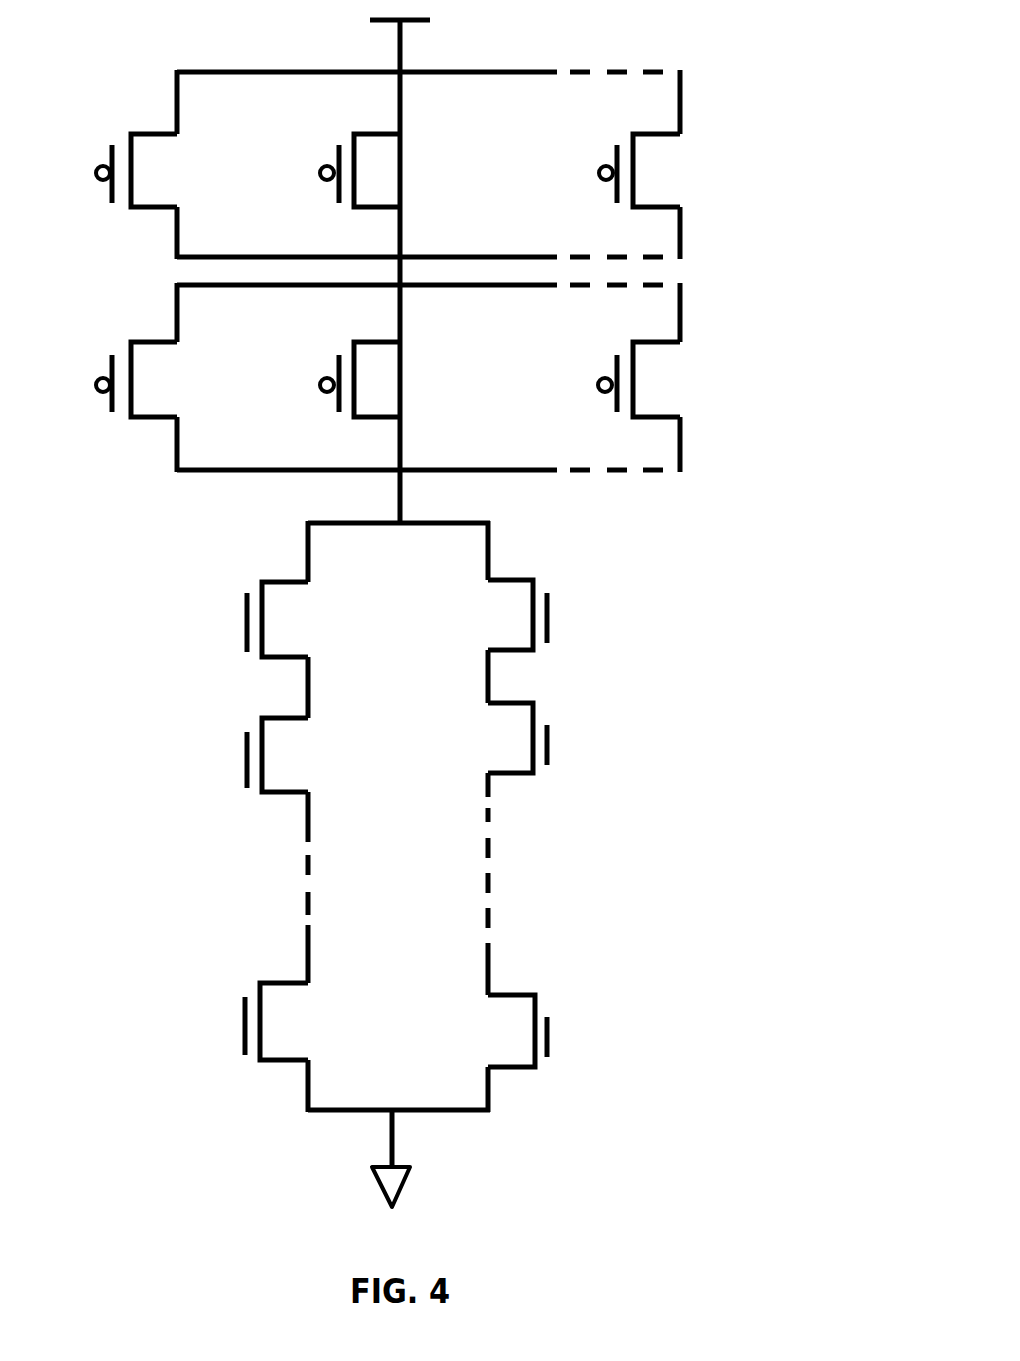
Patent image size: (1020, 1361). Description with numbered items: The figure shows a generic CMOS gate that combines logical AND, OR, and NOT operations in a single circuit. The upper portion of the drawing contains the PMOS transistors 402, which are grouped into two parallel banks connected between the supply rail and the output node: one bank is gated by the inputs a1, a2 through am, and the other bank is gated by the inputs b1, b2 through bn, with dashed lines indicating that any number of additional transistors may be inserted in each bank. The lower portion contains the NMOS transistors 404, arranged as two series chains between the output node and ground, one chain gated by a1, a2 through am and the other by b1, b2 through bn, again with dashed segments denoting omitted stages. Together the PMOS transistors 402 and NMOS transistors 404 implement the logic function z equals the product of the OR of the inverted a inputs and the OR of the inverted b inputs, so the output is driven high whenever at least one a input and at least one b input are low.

The PMOS transistors 402 is at (737, 465).
The NMOS transistors 404 is at (737, 1122).
The input a1 is at (96, 173).
The input a2 is at (320, 173).
The input am is at (599, 173).
The input b1 is at (96, 385).
The input b2 is at (320, 385).
The input bn is at (598, 385).